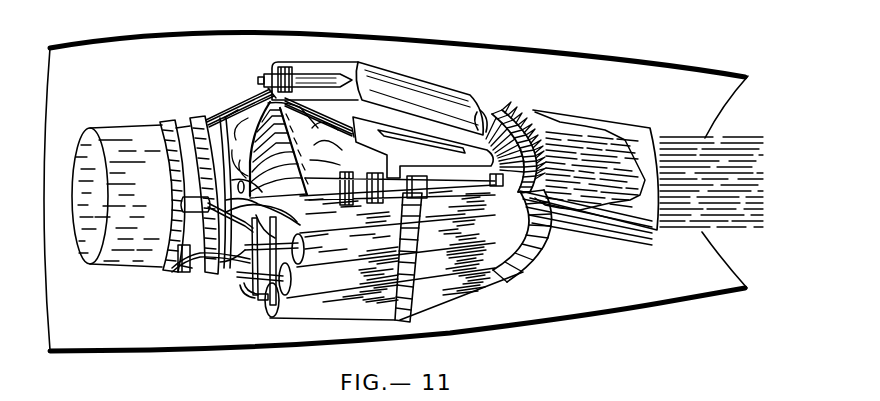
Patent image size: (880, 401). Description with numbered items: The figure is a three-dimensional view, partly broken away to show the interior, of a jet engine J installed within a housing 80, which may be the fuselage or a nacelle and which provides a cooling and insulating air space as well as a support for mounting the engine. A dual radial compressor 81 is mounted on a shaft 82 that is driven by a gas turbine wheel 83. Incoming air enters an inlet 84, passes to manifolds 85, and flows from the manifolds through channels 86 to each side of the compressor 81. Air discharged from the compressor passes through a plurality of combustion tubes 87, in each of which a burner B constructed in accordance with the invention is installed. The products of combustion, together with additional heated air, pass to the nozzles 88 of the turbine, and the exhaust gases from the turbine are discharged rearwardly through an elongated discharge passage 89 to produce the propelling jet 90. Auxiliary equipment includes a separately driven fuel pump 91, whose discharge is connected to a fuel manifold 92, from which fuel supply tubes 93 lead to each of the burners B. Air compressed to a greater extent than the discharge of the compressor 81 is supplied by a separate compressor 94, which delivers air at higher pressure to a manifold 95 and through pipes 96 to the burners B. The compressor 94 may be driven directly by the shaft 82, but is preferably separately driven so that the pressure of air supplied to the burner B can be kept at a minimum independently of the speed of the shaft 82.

The housing 80 is at (568, 48).
The dual radial compressor 81 is at (262, 116).
The shaft 82 is at (393, 173).
The gas turbine wheel 83 is at (522, 110).
The inlet 84 is at (117, 138).
The manifolds 85 is at (222, 112).
The channels 86 is at (226, 142).
The combustion tubes 87 is at (440, 90).
The nozzles 88 is at (477, 105).
The discharge passage 89 is at (630, 126).
The propelling jet 90 is at (742, 152).
The fuel pump 91 is at (181, 206).
The fuel manifold 92 is at (234, 272).
The fuel supply tubes 93 is at (238, 290).
The separate compressor 94 is at (184, 270).
The manifold 95 is at (276, 236).
The pipes 96 is at (262, 306).
The burner B is at (323, 68).
The jet engine J is at (487, 281).